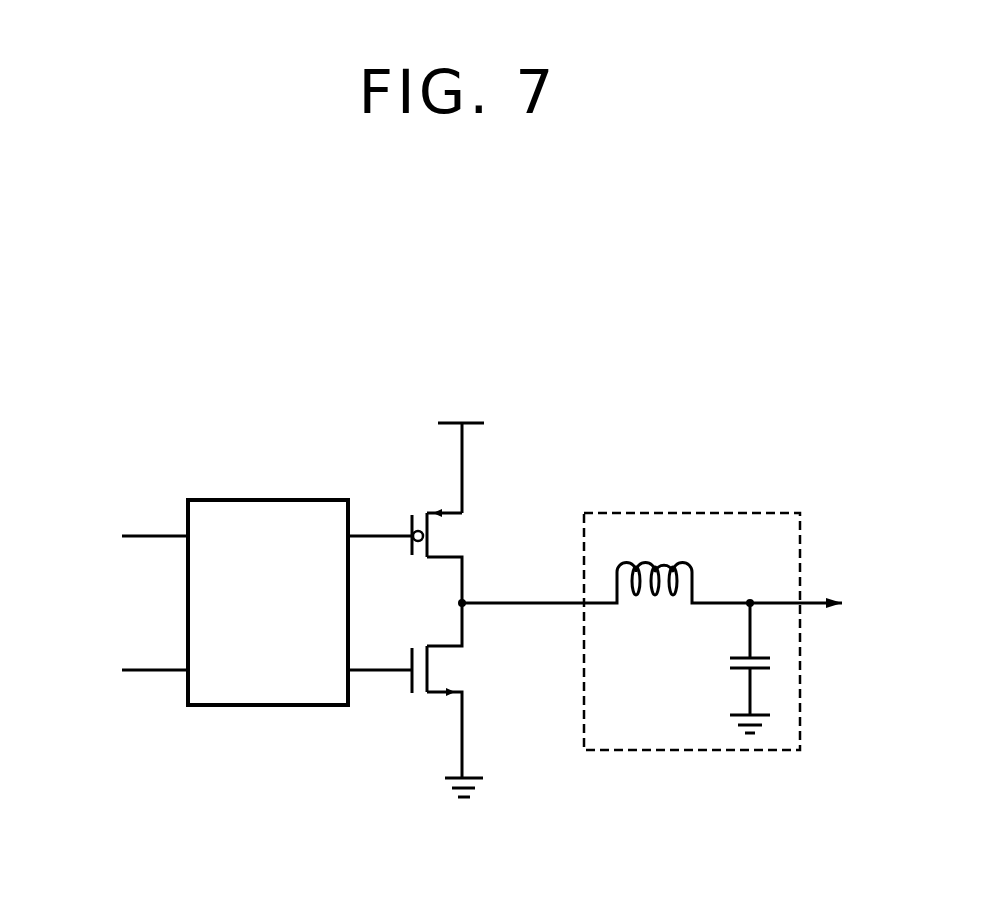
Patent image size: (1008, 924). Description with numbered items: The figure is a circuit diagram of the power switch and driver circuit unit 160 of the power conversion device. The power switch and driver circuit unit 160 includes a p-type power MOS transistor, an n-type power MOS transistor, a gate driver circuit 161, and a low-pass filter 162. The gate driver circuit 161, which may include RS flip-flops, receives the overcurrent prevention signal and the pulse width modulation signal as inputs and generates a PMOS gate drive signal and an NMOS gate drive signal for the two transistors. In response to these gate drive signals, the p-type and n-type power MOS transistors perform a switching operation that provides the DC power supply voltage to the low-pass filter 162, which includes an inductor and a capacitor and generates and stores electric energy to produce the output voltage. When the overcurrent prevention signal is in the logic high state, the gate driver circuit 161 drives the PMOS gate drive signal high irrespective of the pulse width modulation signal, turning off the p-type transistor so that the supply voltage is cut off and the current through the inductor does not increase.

The power switch and driver circuit unit 160 is at (484, 290).
The gate driver circuit 161 is at (262, 500).
The low-pass filter 162 is at (695, 513).